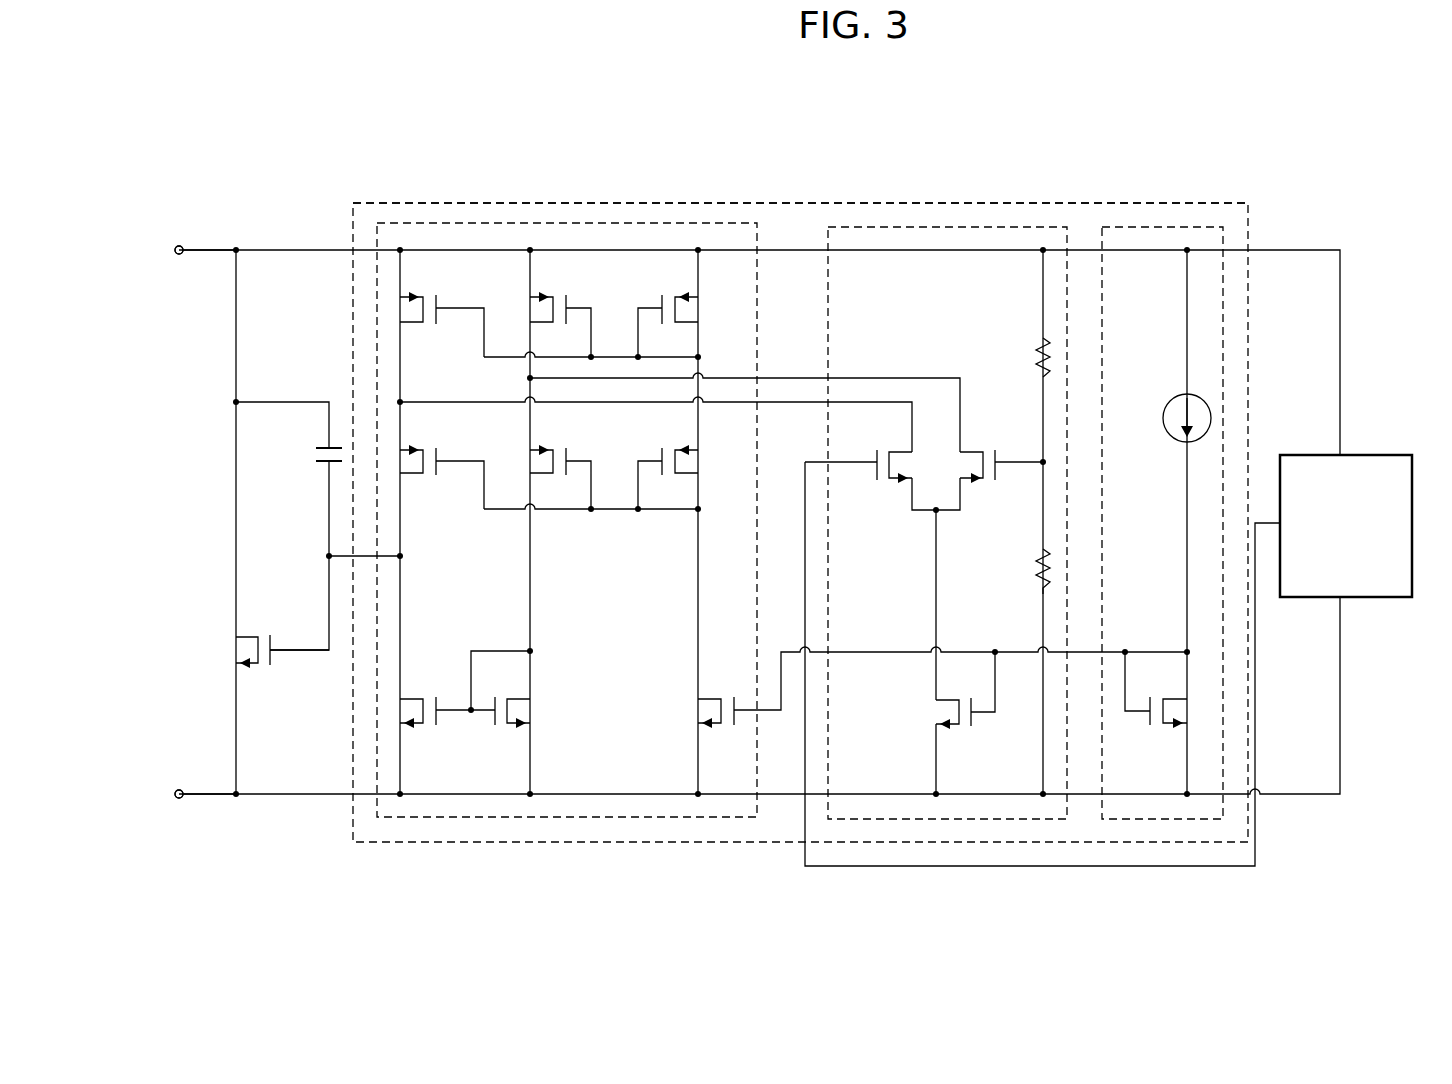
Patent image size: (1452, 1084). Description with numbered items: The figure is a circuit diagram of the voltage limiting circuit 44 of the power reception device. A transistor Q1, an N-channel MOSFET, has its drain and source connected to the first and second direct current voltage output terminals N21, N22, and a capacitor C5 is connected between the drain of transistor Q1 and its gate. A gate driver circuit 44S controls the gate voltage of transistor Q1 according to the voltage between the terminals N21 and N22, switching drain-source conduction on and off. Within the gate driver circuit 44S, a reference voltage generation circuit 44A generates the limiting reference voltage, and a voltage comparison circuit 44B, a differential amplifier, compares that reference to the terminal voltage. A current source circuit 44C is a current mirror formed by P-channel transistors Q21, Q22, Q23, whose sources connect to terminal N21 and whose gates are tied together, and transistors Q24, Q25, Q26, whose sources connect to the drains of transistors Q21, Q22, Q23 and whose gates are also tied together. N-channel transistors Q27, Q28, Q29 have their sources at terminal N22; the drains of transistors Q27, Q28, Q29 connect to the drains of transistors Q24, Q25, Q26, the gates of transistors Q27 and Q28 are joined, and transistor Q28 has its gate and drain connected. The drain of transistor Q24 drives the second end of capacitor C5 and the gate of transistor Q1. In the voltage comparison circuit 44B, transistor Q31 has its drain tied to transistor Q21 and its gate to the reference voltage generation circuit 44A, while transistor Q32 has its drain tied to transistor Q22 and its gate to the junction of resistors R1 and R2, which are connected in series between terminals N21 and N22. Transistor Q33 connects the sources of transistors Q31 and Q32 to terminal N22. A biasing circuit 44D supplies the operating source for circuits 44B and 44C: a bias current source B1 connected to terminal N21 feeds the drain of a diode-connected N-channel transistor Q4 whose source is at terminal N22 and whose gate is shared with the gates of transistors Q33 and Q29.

The voltage limiting circuit 44 is at (234, 158).
The reference voltage generation circuit 44A is at (1386, 455).
The voltage comparison circuit 44B is at (935, 227).
The current source circuit 44C is at (548, 223).
The biasing circuit 44D is at (1157, 227).
The gate driver circuit 44S is at (718, 203).
The first direct current voltage output terminal N21 is at (196, 231).
The second direct current voltage output terminal N22 is at (196, 815).
The capacitor C5 is at (316, 440).
The transistor Q1 is at (282, 665).
The transistor Q21 is at (442, 313).
The transistor Q22 is at (560, 313).
The transistor Q23 is at (668, 313).
The transistor Q24 is at (442, 467).
The transistor Q25 is at (560, 467).
The transistor Q26 is at (668, 467).
The transistor Q27 is at (447, 726).
The transistor Q28 is at (537, 726).
The transistor Q29 is at (688, 726).
The transistor Q31 is at (882, 454).
The transistor Q32 is at (987, 454).
The transistor Q33 is at (938, 723).
The transistor Q4 is at (1156, 703).
The resistor R1 is at (1020, 357).
The resistor R2 is at (1021, 571).
The bias current source B1 is at (1172, 408).